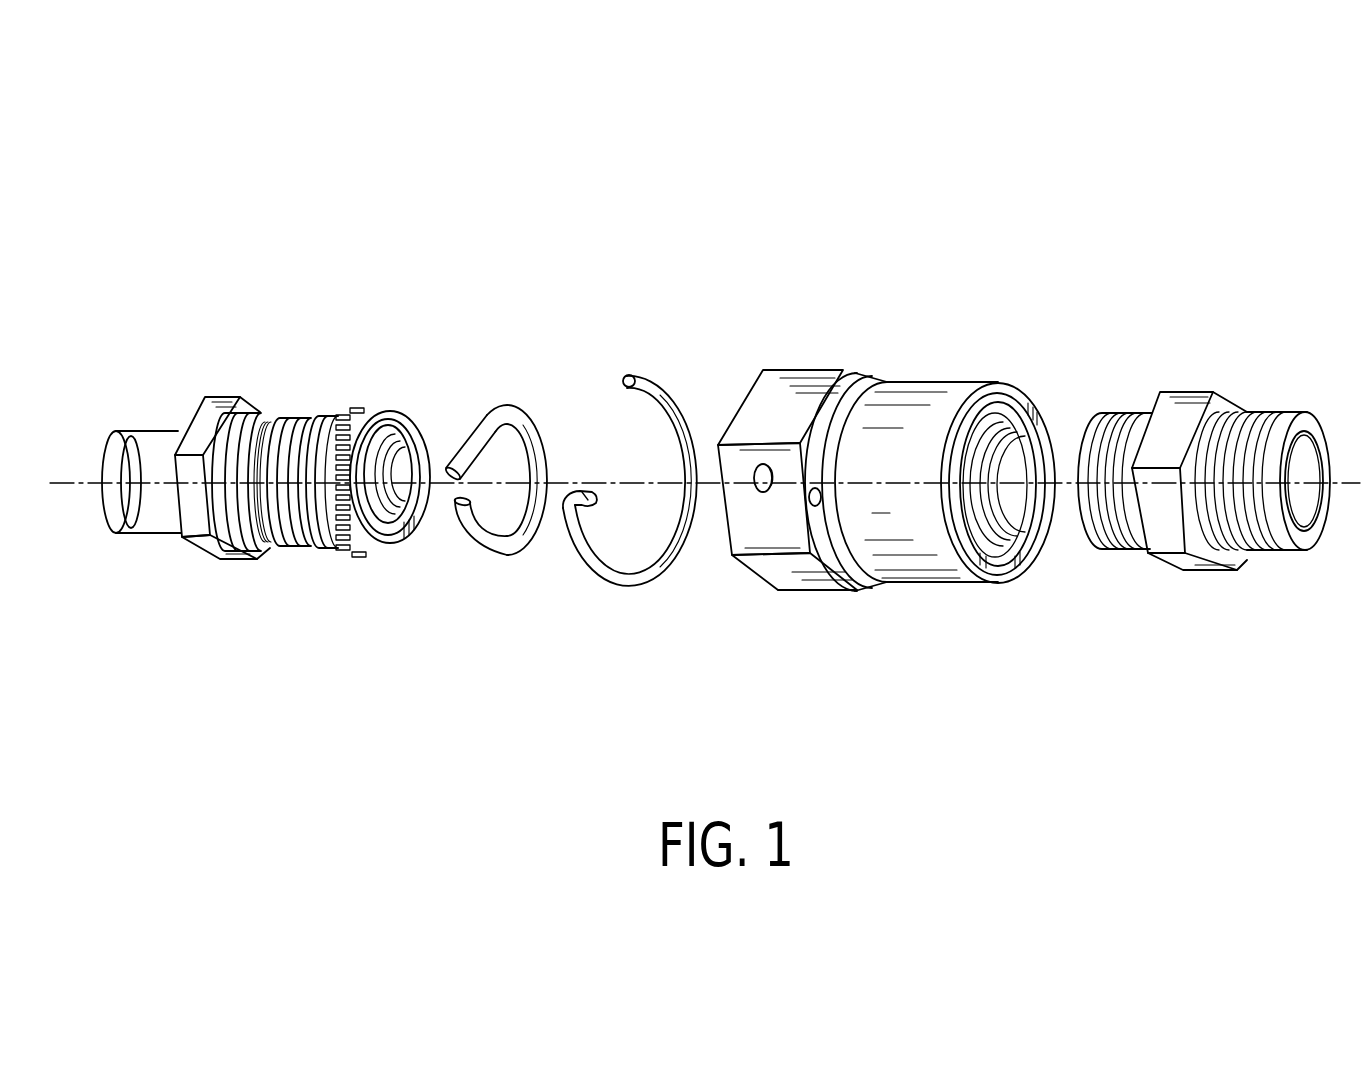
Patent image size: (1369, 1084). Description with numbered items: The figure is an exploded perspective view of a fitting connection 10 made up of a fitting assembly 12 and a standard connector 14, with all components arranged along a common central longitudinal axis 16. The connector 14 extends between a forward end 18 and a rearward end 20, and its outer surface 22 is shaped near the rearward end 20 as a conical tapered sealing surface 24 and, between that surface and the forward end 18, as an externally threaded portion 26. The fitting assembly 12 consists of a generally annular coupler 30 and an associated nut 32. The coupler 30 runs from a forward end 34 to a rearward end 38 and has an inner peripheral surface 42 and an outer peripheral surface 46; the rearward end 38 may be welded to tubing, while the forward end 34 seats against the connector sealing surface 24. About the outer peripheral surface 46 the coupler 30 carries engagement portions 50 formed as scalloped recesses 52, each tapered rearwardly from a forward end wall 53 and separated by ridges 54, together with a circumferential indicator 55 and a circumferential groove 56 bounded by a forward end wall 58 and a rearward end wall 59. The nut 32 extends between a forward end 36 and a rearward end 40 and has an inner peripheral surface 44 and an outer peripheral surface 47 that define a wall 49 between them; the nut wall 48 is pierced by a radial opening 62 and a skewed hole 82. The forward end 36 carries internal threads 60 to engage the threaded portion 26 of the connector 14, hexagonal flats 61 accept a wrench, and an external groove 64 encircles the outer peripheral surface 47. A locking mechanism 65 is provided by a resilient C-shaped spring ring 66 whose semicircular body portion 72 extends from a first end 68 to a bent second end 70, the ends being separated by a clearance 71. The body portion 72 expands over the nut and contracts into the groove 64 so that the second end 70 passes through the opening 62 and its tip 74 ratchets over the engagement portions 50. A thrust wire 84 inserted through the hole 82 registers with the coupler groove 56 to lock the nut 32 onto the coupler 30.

The fitting connection 10 is at (1042, 238).
The fitting assembly 12 is at (1050, 665).
The connector 14 is at (1205, 603).
The central longitudinal axis 16 is at (72, 485).
The forward end 18 is at (1325, 450).
The rearward end 20 is at (1098, 538).
The outer surface 22 is at (1108, 413).
The tapered sealing surface 24 is at (1092, 435).
The externally threaded portion 26 is at (1152, 405).
The coupler 30 is at (175, 522).
The nut 32 is at (846, 375).
The forward end 34 is at (418, 528).
The forward end 36 is at (1013, 580).
The rearward end 38 is at (124, 530).
The rearward end 40 is at (808, 515).
The inner peripheral surface 42 is at (407, 448).
The inner peripheral surface 44 is at (981, 449).
The outer peripheral surface 46 is at (330, 423).
The outer peripheral surface 47 is at (943, 383).
The nut wall 48 is at (1003, 403).
The wall 49 is at (437, 455).
The engagement portions 50 is at (367, 563).
The recesses 52 is at (347, 538).
The forward end wall 53 is at (388, 445).
The ridges 54 is at (320, 548).
The indicator 55 is at (247, 413).
The circumferential groove 56 is at (288, 432).
The forward end wall 58 is at (285, 546).
The rearward end wall 59 is at (268, 548).
The internal threads 60 is at (1017, 520).
The flats 61 is at (818, 591).
The opening 62 is at (815, 500).
The groove 64 is at (848, 392).
The locking mechanism 65 is at (670, 317).
The spring ring 66 is at (677, 407).
The first end 68 is at (629, 375).
The second end 70 is at (593, 490).
The clearance 71 is at (587, 406).
The body portion 72 is at (686, 443).
The tip 74 is at (597, 499).
The hole 82 is at (758, 482).
The thrust wire 84 is at (497, 408).